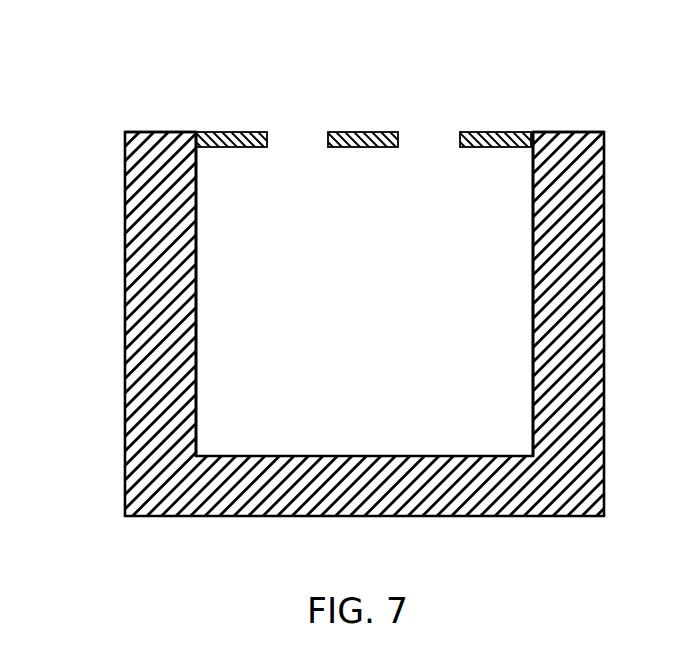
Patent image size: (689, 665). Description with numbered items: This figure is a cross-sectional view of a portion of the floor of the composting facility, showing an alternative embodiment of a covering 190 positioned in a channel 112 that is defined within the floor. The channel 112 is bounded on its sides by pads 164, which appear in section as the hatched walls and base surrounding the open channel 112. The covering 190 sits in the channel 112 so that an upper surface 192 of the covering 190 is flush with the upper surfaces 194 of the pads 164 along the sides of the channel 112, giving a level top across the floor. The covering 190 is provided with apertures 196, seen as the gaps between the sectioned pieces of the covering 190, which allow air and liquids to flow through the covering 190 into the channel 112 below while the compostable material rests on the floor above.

The channel 112 is at (286, 250).
The pad 164 is at (197, 343).
The covering 190 is at (344, 132).
The upper surface 192 is at (497, 129).
The upper surfaces 194 is at (157, 129).
The apertures 196 is at (294, 136).